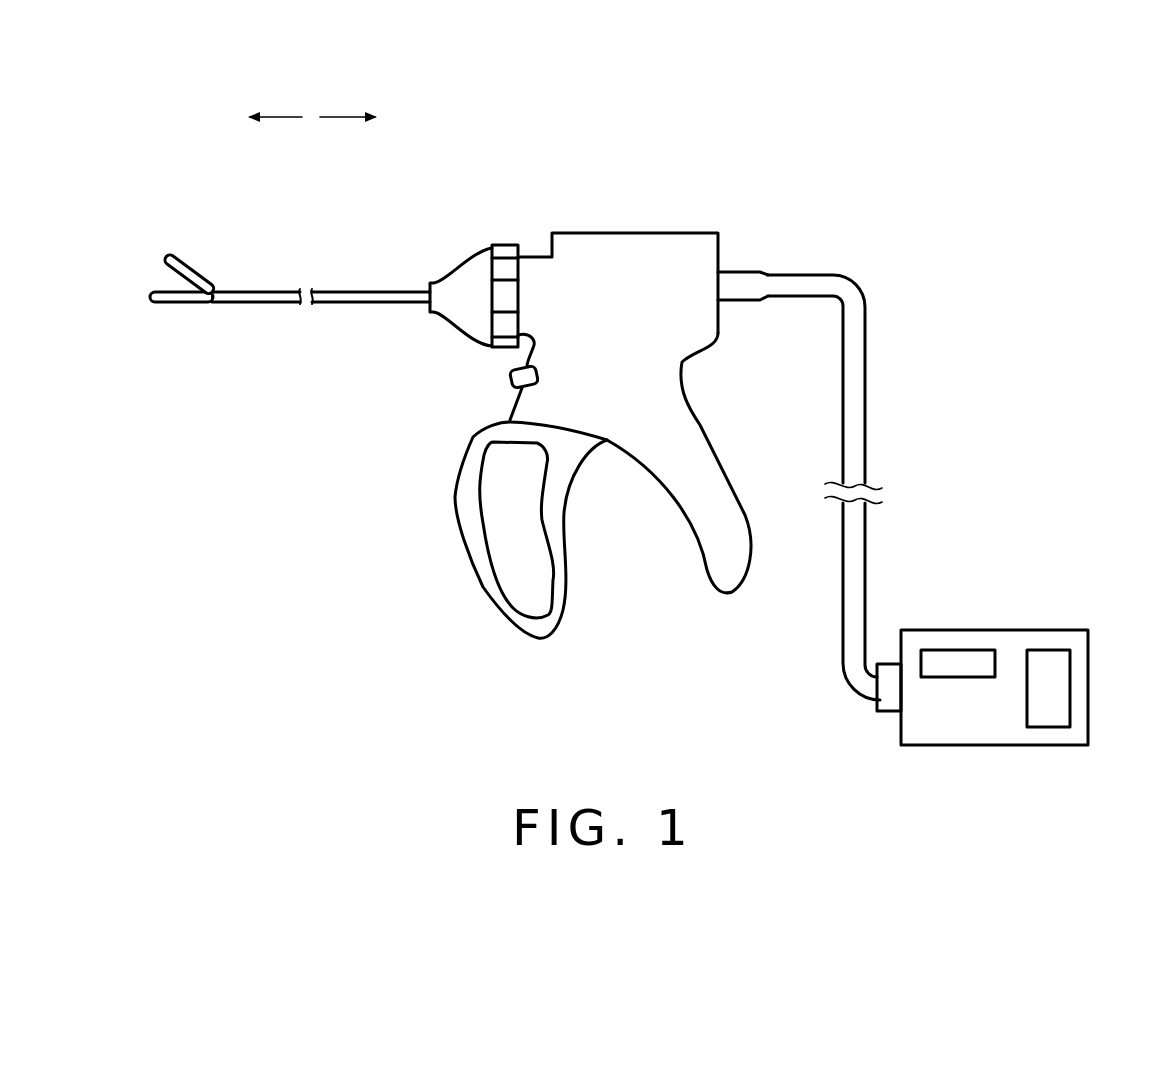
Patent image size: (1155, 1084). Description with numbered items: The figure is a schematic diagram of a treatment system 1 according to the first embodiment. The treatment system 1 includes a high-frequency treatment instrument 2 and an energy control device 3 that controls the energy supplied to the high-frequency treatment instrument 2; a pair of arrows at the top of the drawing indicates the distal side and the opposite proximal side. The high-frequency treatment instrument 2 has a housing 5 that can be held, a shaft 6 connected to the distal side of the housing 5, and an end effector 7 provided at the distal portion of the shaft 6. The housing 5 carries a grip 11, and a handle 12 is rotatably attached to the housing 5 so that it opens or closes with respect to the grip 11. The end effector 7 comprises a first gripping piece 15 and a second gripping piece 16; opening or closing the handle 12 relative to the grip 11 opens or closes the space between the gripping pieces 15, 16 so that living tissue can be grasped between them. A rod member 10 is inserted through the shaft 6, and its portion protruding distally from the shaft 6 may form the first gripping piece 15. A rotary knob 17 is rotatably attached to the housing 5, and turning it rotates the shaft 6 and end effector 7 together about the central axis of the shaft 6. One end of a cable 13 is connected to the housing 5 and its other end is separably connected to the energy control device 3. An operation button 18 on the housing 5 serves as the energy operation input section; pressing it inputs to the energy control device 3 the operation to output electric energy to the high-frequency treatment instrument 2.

The treatment system 1 is at (950, 83).
The high-frequency treatment instrument 2 is at (511, 178).
The energy control device 3 is at (1046, 608).
The housing 5 is at (667, 260).
The shaft 6 is at (333, 294).
The end effector 7 is at (195, 259).
The rod member 10 is at (198, 303).
The grip 11 is at (720, 483).
The handle 12 is at (560, 545).
The cable 13 is at (853, 415).
The first gripping piece 15 is at (172, 304).
The second gripping piece 16 is at (164, 252).
The rotary knob 17 is at (501, 260).
The operation button 18 is at (511, 377).